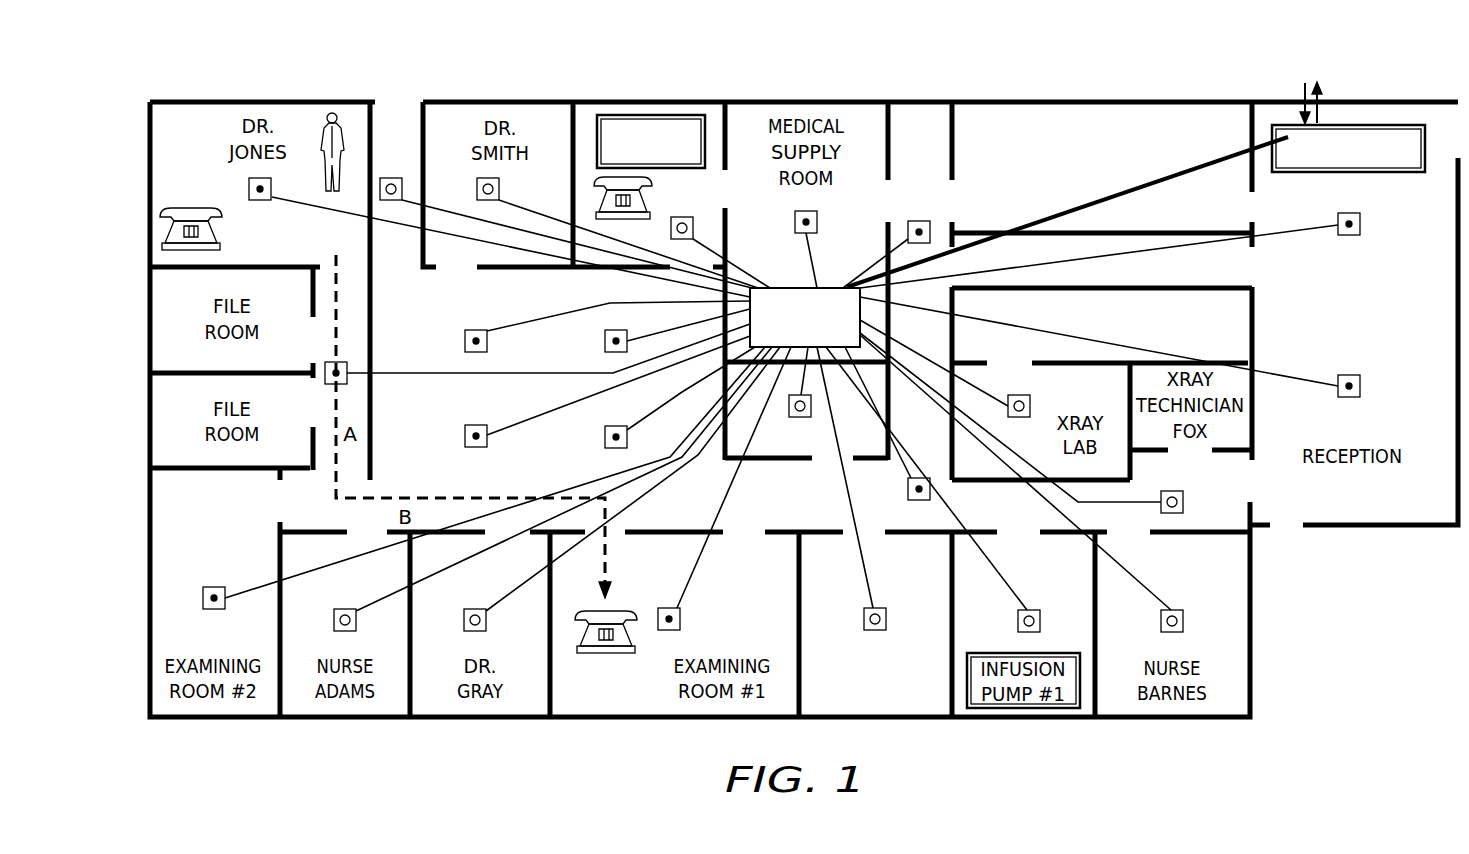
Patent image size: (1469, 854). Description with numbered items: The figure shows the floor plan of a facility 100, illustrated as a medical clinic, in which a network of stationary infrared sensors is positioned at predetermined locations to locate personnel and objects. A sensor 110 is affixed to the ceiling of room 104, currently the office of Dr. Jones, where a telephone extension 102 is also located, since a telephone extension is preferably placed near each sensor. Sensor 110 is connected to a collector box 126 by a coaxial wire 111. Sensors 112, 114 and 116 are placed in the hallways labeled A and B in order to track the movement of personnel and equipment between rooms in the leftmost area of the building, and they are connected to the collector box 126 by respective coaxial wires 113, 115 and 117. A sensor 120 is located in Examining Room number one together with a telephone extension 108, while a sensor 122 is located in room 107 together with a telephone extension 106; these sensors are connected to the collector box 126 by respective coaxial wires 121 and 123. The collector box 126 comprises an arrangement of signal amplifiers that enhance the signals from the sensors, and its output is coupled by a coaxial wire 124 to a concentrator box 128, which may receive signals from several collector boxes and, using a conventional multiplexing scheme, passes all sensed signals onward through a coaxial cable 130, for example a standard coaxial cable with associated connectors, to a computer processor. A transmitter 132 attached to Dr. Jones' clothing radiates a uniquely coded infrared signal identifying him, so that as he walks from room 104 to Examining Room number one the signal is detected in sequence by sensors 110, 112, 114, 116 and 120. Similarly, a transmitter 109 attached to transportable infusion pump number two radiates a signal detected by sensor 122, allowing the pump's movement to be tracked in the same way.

The facility 100 is at (783, 40).
The telephone extension 102 is at (161, 225).
The room 104 is at (247, 100).
The telephone extension 106 is at (594, 205).
The room 107 is at (690, 100).
The telephone extension 108 is at (600, 656).
The transmitter 109 is at (617, 115).
The sensor 110 is at (248, 187).
The coaxial wire 111 is at (279, 204).
The sensor 112 is at (327, 363).
The coaxial wire 113 is at (429, 371).
The sensor 114 is at (465, 437).
The coaxial wire 115 is at (520, 421).
The sensor 116 is at (604, 438).
The coaxial wire 117 is at (685, 396).
The sensor 120 is at (681, 619).
The coaxial wire 121 is at (745, 504).
The sensor 122 is at (688, 217).
The coaxial wire 123 is at (773, 269).
The coaxial wire 124 is at (1122, 190).
The collector box 126 is at (787, 342).
The concentrator box 128 is at (1398, 173).
The coaxial cable 130 is at (1325, 90).
The transmitter 132 is at (330, 113).